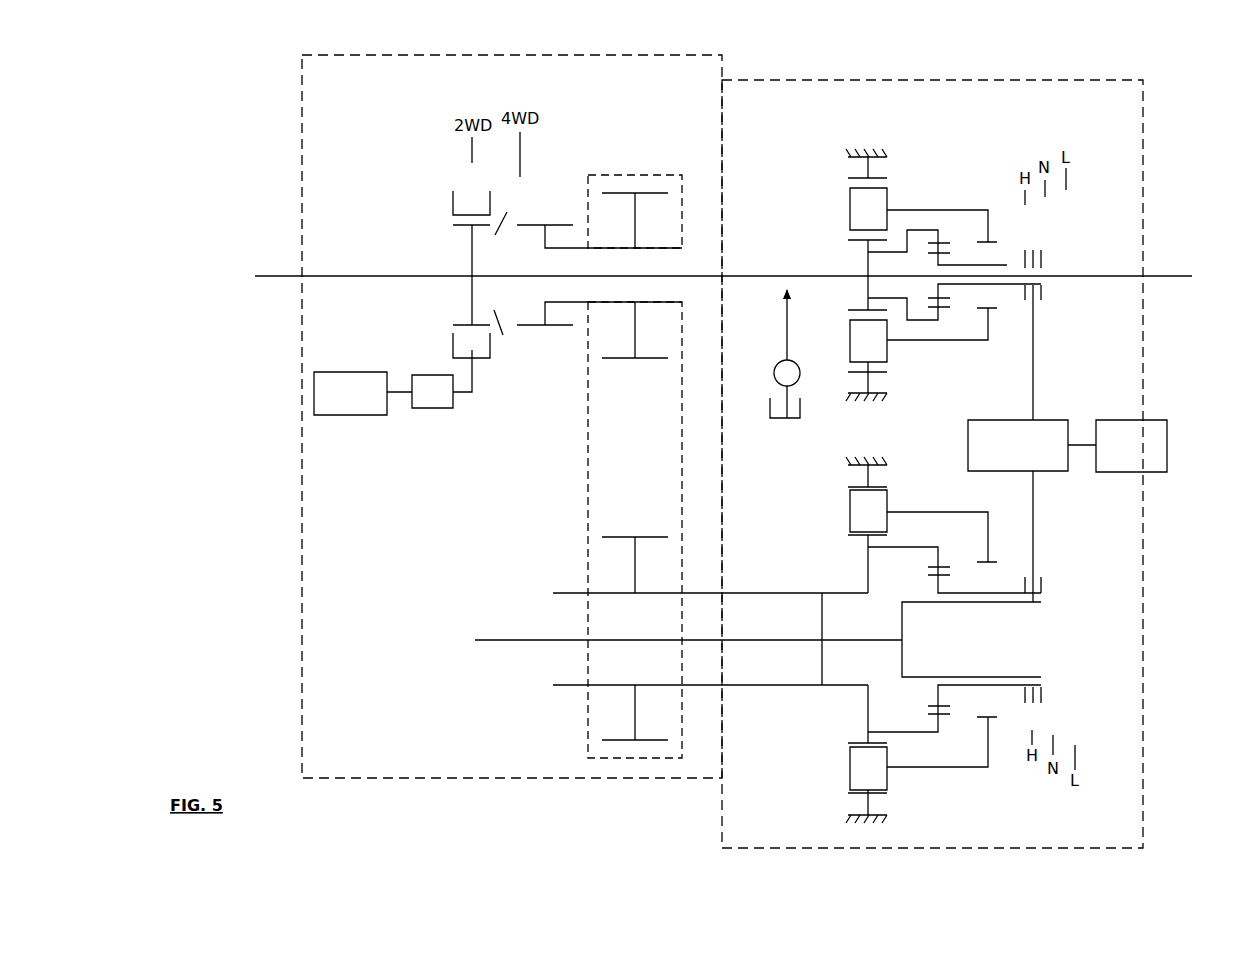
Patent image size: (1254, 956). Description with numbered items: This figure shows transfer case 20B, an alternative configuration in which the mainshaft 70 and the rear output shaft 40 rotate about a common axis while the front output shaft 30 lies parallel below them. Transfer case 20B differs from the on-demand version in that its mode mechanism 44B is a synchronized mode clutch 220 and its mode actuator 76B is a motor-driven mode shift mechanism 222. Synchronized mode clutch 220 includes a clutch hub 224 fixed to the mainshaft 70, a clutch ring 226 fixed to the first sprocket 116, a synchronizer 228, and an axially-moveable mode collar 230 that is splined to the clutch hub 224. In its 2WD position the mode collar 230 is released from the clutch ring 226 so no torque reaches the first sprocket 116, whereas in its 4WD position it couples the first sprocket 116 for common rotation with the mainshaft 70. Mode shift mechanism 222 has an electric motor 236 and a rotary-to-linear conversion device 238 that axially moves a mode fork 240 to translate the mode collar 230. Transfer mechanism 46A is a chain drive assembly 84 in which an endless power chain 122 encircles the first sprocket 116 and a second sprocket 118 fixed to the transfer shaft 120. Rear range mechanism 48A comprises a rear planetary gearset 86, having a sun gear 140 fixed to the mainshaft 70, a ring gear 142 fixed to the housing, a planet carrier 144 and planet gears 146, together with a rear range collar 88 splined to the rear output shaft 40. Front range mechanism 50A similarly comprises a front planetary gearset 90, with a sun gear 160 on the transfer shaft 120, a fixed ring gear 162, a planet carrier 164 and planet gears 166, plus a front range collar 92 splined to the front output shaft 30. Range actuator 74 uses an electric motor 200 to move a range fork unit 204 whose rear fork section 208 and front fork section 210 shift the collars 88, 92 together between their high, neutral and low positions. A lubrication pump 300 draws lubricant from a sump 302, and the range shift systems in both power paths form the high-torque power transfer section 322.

The transfer case 20B is at (1118, 62).
The front output shaft 30 is at (520, 640).
The rear output shaft 40 is at (1165, 275).
The mode mechanism 44B is at (585, 125).
The transfer mechanism 46A is at (688, 478).
The rear range mechanism 48A is at (930, 160).
The front range mechanism 50A is at (808, 720).
The mainshaft 70 is at (355, 275).
The range actuator 74 is at (1168, 398).
The mode actuator 76B is at (400, 417).
The chain drive assembly 84 is at (685, 205).
The rear planetary gearset 86 is at (923, 274).
The rear range collar 88 is at (1005, 265).
The front planetary gearset 90 is at (916, 642).
The front range collar 92 is at (1005, 685).
The first sprocket 116 is at (656, 193).
The second sprocket 118 is at (628, 742).
The transfer shaft 120 is at (710, 590).
The endless power chain 122 is at (588, 475).
The sun gear 140 is at (868, 262).
The ring gear 142 is at (866, 167).
The planet carrier 144 is at (947, 342).
The planet gears 146 is at (855, 210).
The sun gear 160 is at (868, 578).
The ring gear 162 is at (868, 800).
The planet carrier 164 is at (912, 512).
The planet gears 166 is at (850, 525).
The electric motor 200 is at (1168, 452).
The range fork unit 204 is at (1043, 418).
The rear fork section 208 is at (1033, 345).
The front fork section 210 is at (1033, 525).
The synchronized mode clutch 220 is at (540, 330).
The motor-driven mode shift mechanism 222 is at (352, 417).
The clutch hub 224 is at (472, 246).
The clutch ring 226 is at (557, 225).
The synchronizer 228 is at (506, 325).
The mode collar 230 is at (453, 200).
The electric motor 236 is at (352, 372).
The rotary-to-linear conversion device 238 is at (440, 408).
The mode fork 240 is at (470, 368).
The lubrication pump 300 is at (790, 358).
The sump 302 is at (770, 410).
The high-torque power transfer section 322 is at (1095, 650).